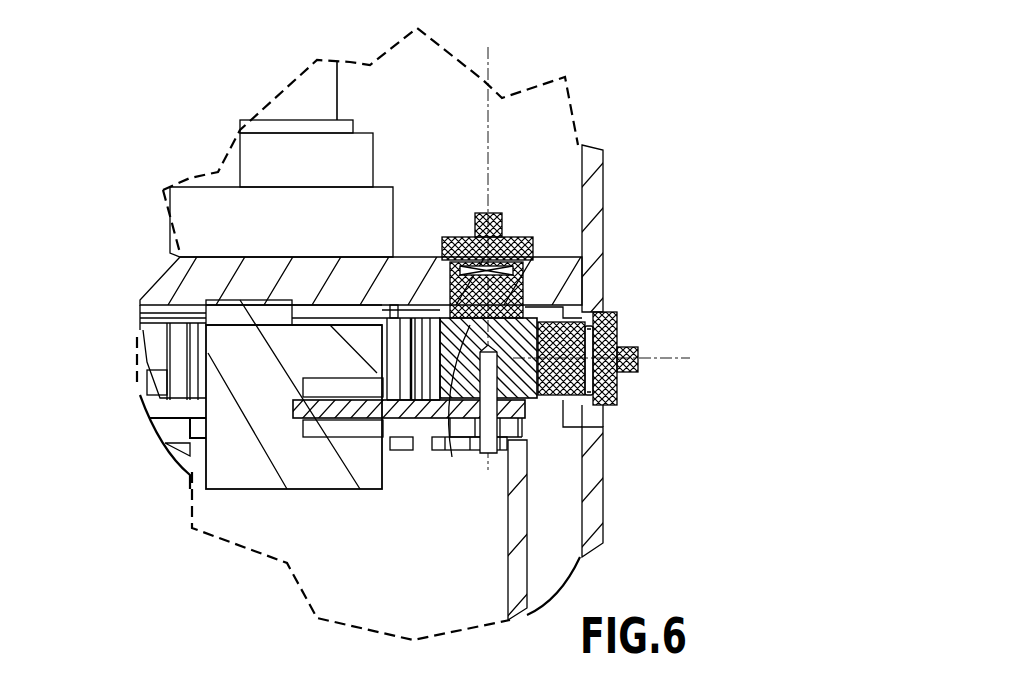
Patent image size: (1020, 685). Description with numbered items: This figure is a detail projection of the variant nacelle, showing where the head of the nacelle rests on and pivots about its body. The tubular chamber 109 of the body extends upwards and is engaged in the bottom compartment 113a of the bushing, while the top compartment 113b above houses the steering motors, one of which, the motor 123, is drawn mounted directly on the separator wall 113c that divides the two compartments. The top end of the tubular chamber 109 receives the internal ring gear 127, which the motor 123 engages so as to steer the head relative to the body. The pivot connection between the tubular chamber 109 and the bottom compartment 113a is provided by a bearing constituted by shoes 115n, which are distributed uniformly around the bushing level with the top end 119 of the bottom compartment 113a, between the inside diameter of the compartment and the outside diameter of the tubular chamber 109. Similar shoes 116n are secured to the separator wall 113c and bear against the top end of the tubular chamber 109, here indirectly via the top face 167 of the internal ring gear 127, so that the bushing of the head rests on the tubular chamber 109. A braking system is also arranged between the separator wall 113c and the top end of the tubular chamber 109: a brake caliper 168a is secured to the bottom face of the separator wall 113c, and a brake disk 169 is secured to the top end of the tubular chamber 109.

The tubular chamber 109 is at (508, 592).
The bottom compartment 113a is at (598, 467).
The top compartment 113b is at (595, 210).
The separator wall 113c is at (178, 282).
The shoes 115n is at (620, 347).
The shoes 116n is at (455, 237).
The top end 119 is at (573, 403).
The motor 123 is at (337, 98).
The internal ring gear 127 is at (413, 450).
The top face 167 is at (462, 445).
The brake caliper 168a is at (259, 480).
The brake disk 169 is at (345, 418).